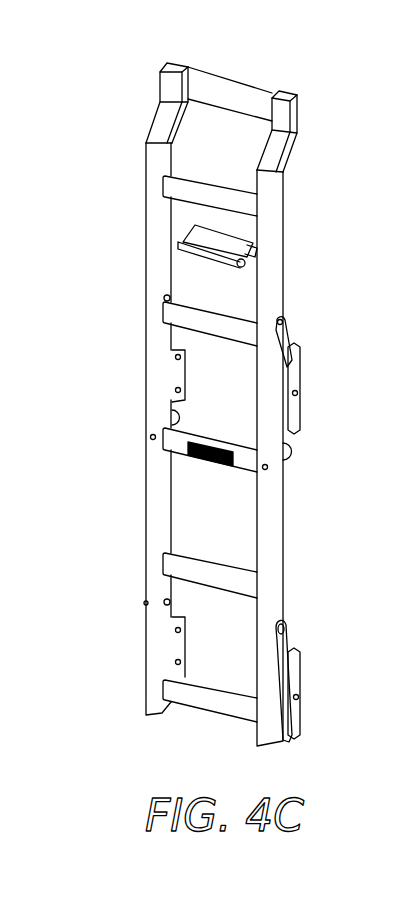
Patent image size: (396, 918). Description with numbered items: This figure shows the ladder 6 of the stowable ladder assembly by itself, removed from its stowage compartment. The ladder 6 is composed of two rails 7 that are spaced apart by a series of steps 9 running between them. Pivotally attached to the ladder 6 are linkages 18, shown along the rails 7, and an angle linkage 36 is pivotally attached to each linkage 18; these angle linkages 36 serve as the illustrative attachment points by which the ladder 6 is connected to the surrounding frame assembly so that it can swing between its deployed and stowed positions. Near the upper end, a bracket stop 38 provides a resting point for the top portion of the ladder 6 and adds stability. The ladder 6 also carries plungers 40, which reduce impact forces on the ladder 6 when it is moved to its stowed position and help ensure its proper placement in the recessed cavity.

The ladder 6 is at (158, 662).
The rail 7 is at (145, 157).
The step 9 is at (204, 190).
The linkage 18 is at (145, 300).
The angle linkage 36 is at (300, 375).
The bracket stop 38 is at (190, 242).
The plunger 40 is at (296, 453).